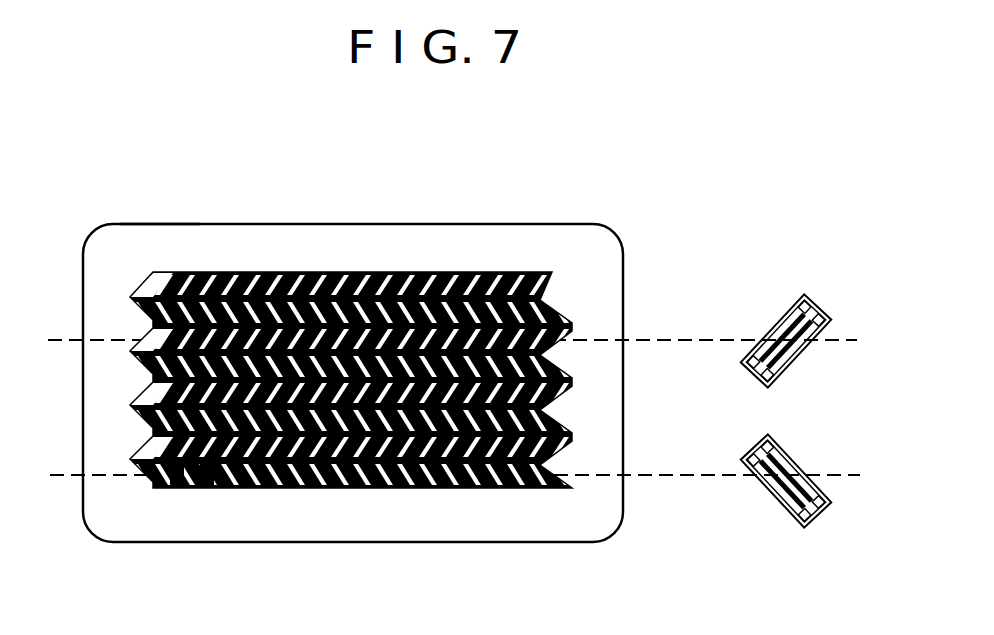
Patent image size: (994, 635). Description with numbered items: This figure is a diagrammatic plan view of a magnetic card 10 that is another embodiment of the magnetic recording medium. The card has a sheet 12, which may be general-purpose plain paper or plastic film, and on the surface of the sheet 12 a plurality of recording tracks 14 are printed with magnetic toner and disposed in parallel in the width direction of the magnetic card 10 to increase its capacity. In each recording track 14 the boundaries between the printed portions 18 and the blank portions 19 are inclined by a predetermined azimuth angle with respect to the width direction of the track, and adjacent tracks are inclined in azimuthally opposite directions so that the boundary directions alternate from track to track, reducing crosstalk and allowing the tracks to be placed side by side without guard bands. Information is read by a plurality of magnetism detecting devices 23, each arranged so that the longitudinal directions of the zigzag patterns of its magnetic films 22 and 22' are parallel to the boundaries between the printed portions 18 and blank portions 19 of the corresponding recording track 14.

The magnetic card 10 is at (643, 158).
The sheet 12 is at (155, 245).
The recording track 14 is at (153, 443).
The printed portion 18 is at (177, 490).
The blank portion 19 is at (207, 488).
The magnetic film 22 is at (454, 464).
The magnetic film 22' is at (794, 358).
The magnetism detecting device 23 is at (792, 457).